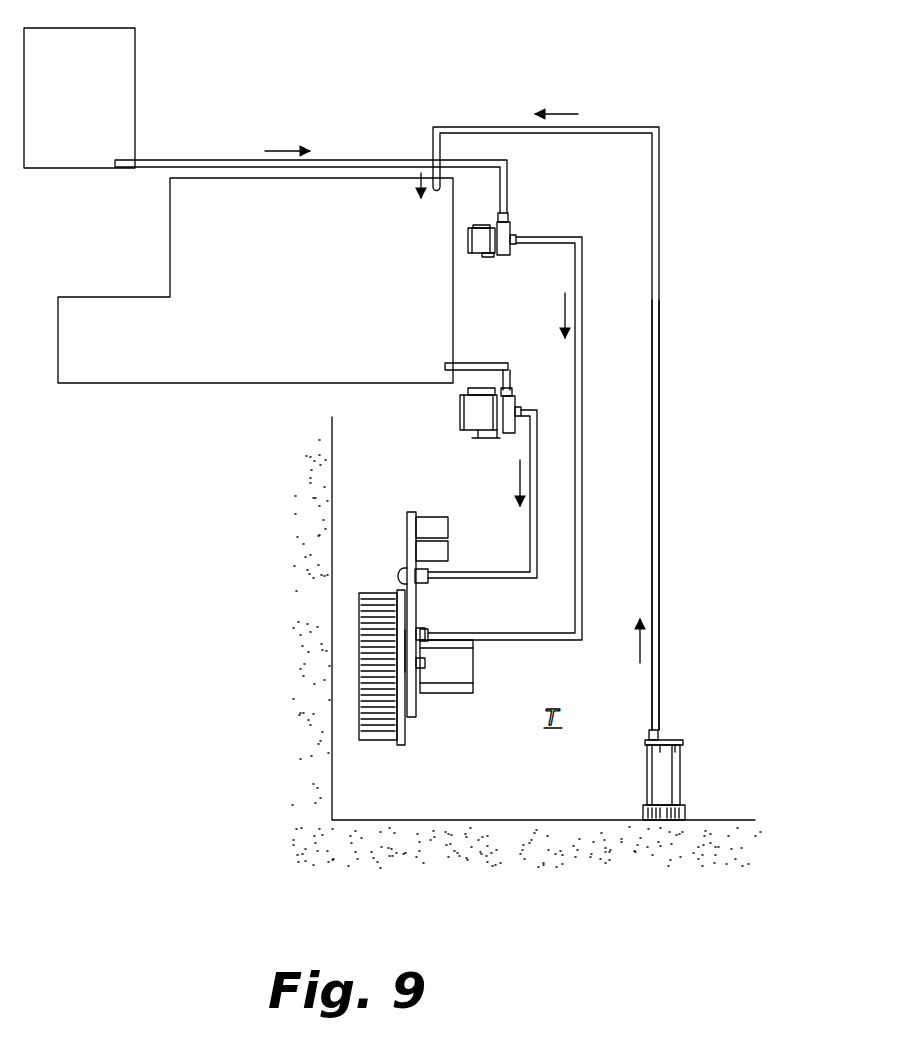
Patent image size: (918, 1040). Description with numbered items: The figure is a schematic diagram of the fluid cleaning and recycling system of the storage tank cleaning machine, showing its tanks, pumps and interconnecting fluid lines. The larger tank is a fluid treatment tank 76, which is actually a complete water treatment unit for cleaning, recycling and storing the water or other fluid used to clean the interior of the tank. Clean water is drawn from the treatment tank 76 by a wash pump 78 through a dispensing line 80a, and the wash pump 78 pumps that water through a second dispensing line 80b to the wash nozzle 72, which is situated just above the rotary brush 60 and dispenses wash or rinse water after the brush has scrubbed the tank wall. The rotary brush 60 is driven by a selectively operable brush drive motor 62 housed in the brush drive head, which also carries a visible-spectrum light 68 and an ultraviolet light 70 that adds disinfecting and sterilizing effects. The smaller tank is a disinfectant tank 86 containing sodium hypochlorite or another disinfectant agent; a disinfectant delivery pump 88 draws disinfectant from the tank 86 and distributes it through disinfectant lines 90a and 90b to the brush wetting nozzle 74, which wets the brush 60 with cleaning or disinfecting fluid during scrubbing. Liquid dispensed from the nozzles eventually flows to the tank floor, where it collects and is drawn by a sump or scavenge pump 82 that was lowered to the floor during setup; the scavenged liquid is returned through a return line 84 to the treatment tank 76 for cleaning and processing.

The disinfectant tank 86 is at (97, 101).
The fluid treatment tank 76 is at (320, 295).
The disinfectant line 90a is at (365, 158).
The disinfectant line 90b is at (582, 392).
The return line 84 is at (659, 425).
The disinfectant delivery pump 88 is at (480, 257).
The dispensing line 80a is at (472, 362).
The wash pump 78 is at (457, 405).
The dispensing line 80b is at (530, 540).
The ultraviolet light 70 is at (405, 520).
The light 68 is at (405, 552).
The wash nozzle 72 is at (398, 578).
The brush wetting nozzle 74 is at (405, 632).
The rotary brush 60 is at (360, 690).
The brush drive motor 62 is at (447, 695).
The scavenge pump 82 is at (683, 773).